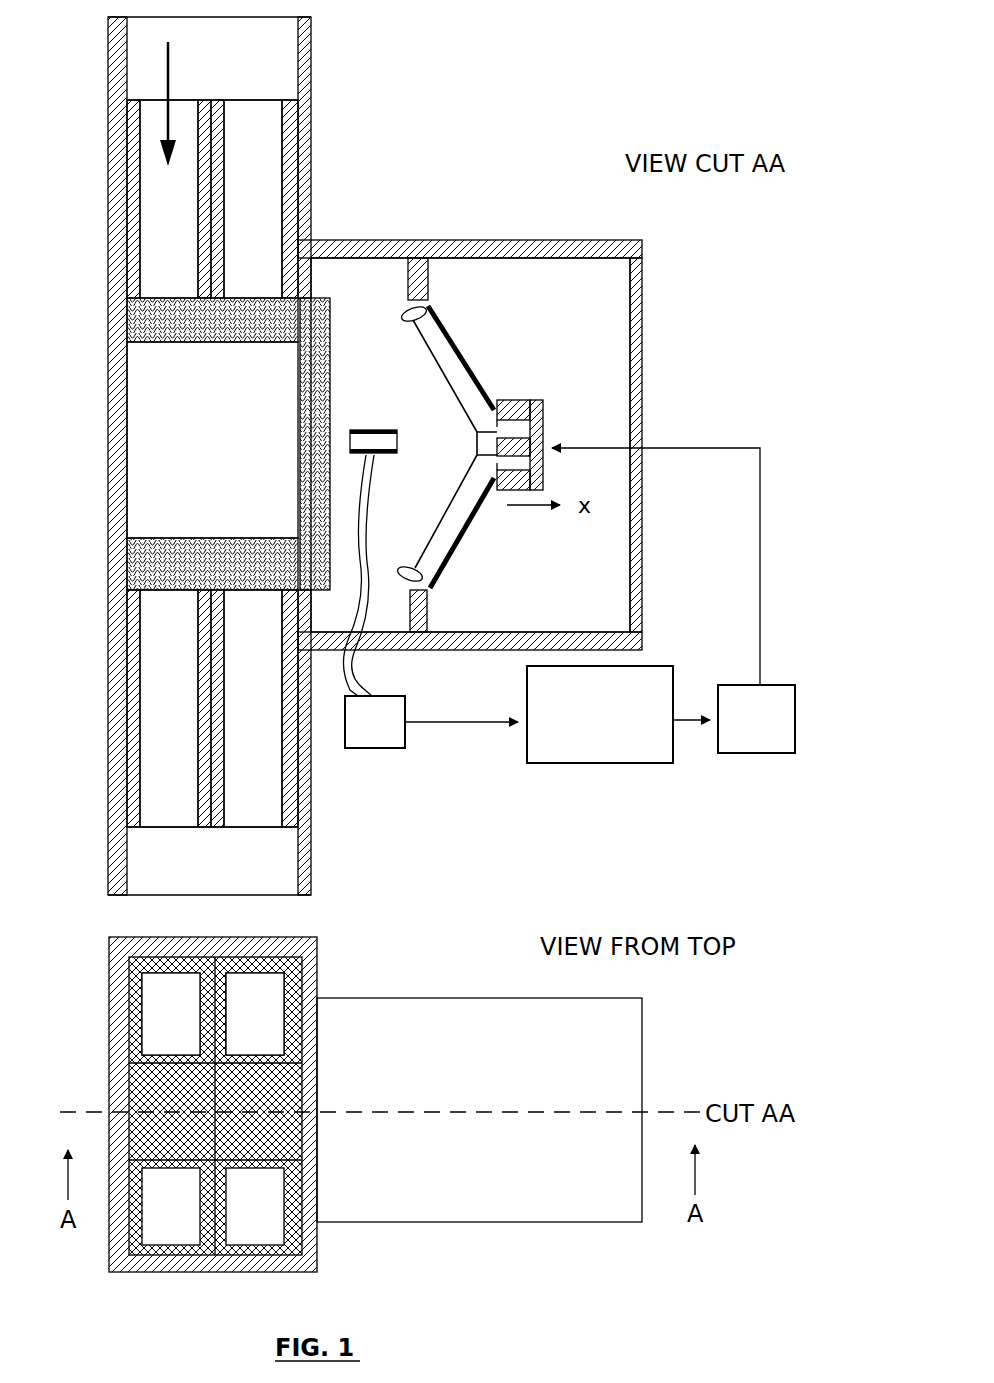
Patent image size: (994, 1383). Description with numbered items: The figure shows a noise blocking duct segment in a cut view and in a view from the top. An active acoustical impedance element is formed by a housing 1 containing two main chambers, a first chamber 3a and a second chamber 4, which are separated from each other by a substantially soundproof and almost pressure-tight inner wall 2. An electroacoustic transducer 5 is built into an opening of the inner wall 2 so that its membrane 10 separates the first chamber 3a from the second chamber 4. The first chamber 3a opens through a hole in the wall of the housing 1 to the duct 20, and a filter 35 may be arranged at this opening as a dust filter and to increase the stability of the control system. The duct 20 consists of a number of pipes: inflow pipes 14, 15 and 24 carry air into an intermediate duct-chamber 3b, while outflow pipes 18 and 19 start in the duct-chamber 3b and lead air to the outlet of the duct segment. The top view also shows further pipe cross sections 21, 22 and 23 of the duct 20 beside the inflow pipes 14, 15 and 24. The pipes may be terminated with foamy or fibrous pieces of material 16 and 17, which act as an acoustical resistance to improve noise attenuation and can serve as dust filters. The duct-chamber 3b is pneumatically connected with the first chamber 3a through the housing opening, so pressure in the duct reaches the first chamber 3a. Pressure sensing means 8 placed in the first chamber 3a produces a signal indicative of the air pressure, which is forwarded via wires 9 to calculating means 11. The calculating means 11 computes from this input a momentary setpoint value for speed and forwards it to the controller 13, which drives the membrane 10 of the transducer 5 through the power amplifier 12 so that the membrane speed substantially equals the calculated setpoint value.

The housing 1 is at (521, 245).
The inner wall 2 is at (416, 262).
The first chamber 3a is at (375, 444).
The duct-chamber 3b is at (212, 440).
The second chamber 4 is at (470, 445).
The electroacoustic transducer 5 is at (498, 400).
The pressure sensing means 8 is at (383, 462).
The wires 9 is at (375, 673).
The membrane 10 is at (430, 370).
The calculating means 11 is at (365, 800).
The power amplifier 12 is at (775, 785).
The controller 13 is at (616, 792).
The inflow pipe 14 is at (170, 606).
The inflow pipe 15 is at (254, 606).
The foamy or fibrous material piece 16 is at (200, 330).
The foamy or fibrous material piece 17 is at (204, 575).
The outflow pipe 18 is at (169, 710).
The outflow pipe 19 is at (253, 710).
The duct 20 is at (112, 280).
The flow channel 21 is at (171, 1014).
The flow channel 22 is at (255, 1014).
The flow channel 23 is at (255, 1206).
The inflow pipe 24 is at (171, 1206).
The filter 35 is at (318, 390).